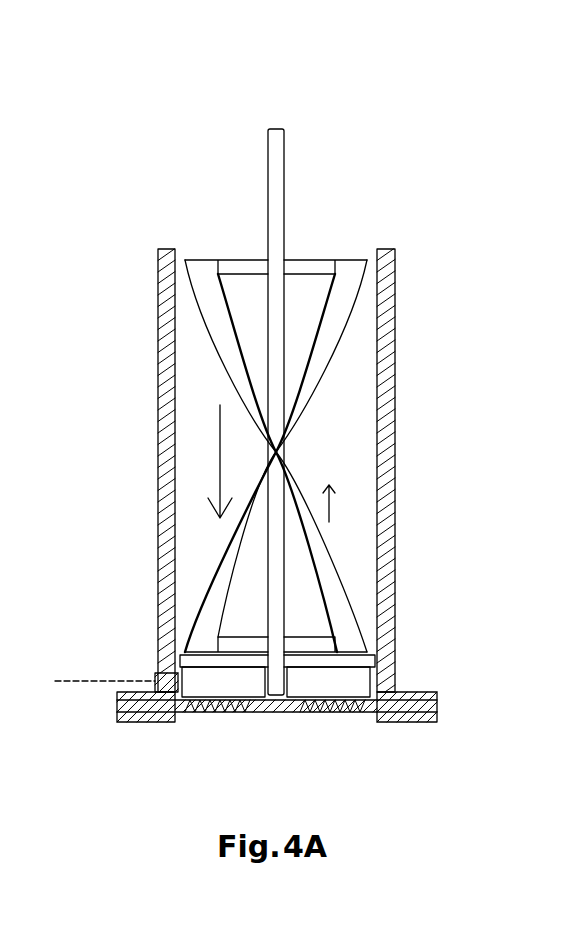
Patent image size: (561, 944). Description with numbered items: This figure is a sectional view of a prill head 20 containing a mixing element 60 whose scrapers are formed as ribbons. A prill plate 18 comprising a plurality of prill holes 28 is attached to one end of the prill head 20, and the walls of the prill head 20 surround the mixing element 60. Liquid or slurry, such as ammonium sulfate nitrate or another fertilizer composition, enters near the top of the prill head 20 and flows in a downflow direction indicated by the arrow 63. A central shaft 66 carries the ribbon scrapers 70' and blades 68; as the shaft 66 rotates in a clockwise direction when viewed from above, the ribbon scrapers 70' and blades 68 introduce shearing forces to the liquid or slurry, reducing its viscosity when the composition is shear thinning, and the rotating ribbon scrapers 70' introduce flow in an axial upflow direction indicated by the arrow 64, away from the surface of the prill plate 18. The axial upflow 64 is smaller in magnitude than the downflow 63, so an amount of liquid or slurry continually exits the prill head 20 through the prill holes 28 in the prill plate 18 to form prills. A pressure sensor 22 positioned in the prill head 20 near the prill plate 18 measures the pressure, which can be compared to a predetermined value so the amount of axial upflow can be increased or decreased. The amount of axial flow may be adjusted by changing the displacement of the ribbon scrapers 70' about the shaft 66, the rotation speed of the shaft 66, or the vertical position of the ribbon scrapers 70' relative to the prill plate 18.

The mixing element 60 is at (206, 148).
The shaft 66 is at (278, 155).
The ribbon scrapers 70' is at (285, 410).
The prill head 20 is at (402, 371).
The downflow direction arrow 63 is at (220, 462).
The axial upflow direction arrow 64 is at (332, 502).
The pressure sensor 22 is at (153, 677).
The blades 68 is at (375, 678).
The prill plate 18 is at (212, 713).
The prill holes 28 is at (345, 713).